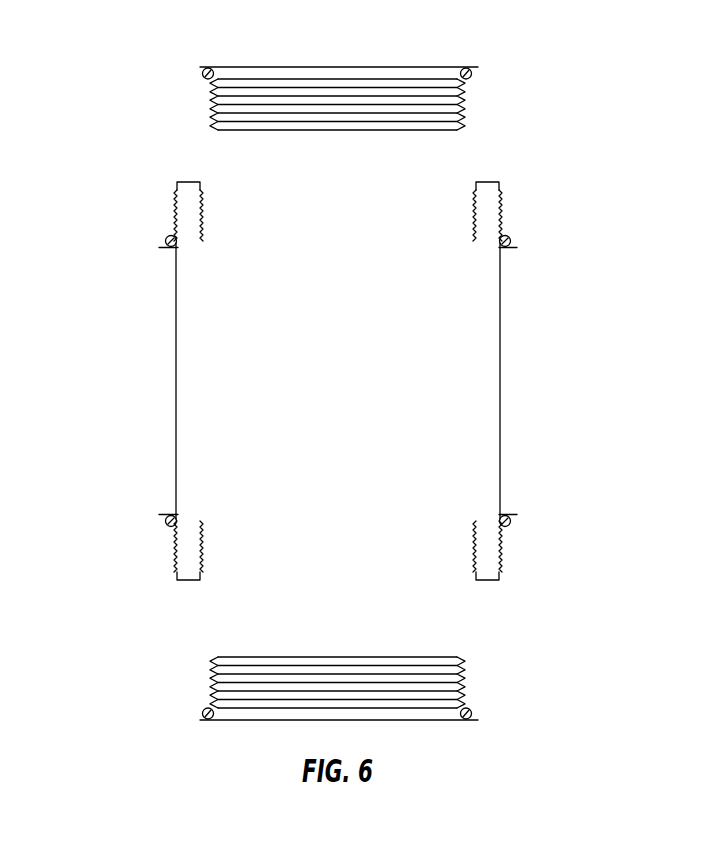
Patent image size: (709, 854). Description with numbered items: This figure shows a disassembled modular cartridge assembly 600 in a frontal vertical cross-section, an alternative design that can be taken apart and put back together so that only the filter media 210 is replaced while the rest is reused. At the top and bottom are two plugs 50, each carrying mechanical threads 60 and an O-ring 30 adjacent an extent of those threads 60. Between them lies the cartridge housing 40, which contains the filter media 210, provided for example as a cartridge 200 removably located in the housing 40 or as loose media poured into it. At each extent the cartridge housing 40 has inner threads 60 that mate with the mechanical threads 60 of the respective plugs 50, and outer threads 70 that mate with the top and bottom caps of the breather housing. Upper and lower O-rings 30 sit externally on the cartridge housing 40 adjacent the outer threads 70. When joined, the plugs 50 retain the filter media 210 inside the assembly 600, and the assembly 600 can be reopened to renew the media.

The O-ring 30 is at (203, 74).
The cartridge housing 40 is at (176, 382).
The plug 50 is at (415, 67).
The threads 60 is at (213, 110).
The outer threads 70 is at (175, 205).
The cartridge 200 is at (500, 382).
The filter media 210 is at (305, 422).
The cartridge assembly 600 is at (571, 143).